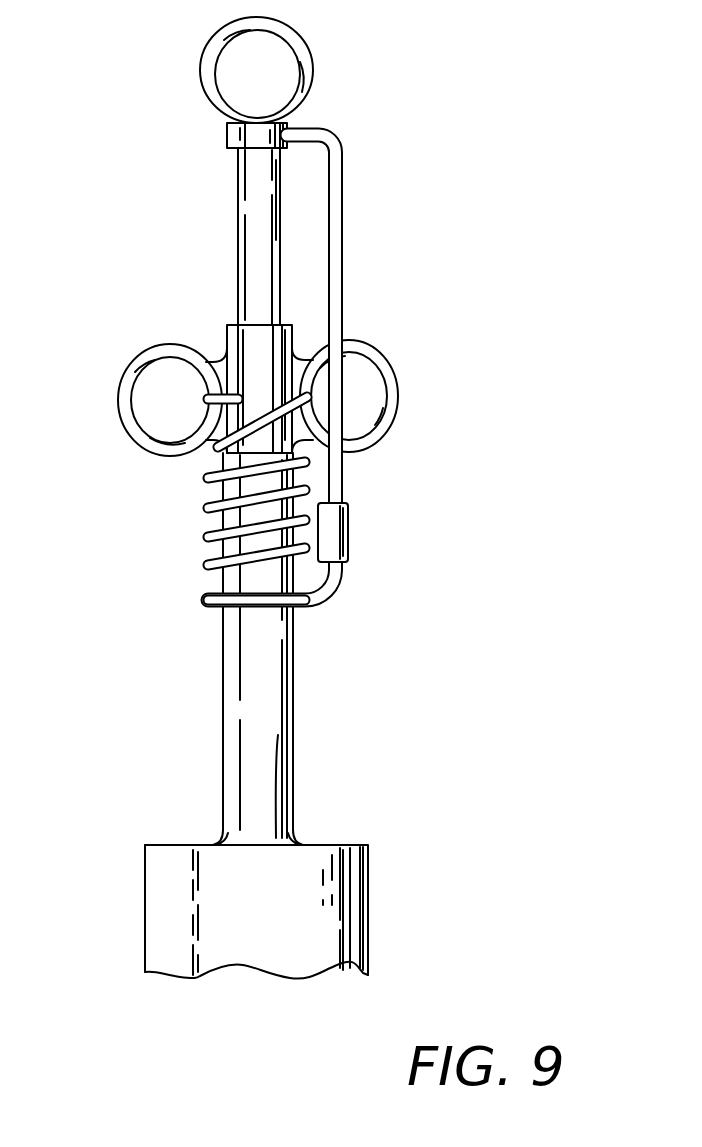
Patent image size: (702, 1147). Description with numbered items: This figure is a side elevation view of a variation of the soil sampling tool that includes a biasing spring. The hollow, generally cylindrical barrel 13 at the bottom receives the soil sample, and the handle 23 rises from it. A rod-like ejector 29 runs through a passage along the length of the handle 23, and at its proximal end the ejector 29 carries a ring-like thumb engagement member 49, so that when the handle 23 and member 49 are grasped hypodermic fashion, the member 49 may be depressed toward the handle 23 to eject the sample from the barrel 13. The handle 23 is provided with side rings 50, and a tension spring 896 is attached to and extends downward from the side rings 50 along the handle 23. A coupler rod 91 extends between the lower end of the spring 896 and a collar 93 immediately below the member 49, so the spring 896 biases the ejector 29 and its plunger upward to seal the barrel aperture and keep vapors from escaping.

The barrel 13 is at (370, 858).
The handle 23 is at (293, 690).
The ejector 29 is at (238, 253).
The thumb engagement member 49 is at (298, 43).
The collar 93 is at (227, 133).
The side rings 50 is at (135, 363).
The coupler rod 91 is at (343, 223).
The coil spring 896 is at (207, 533).